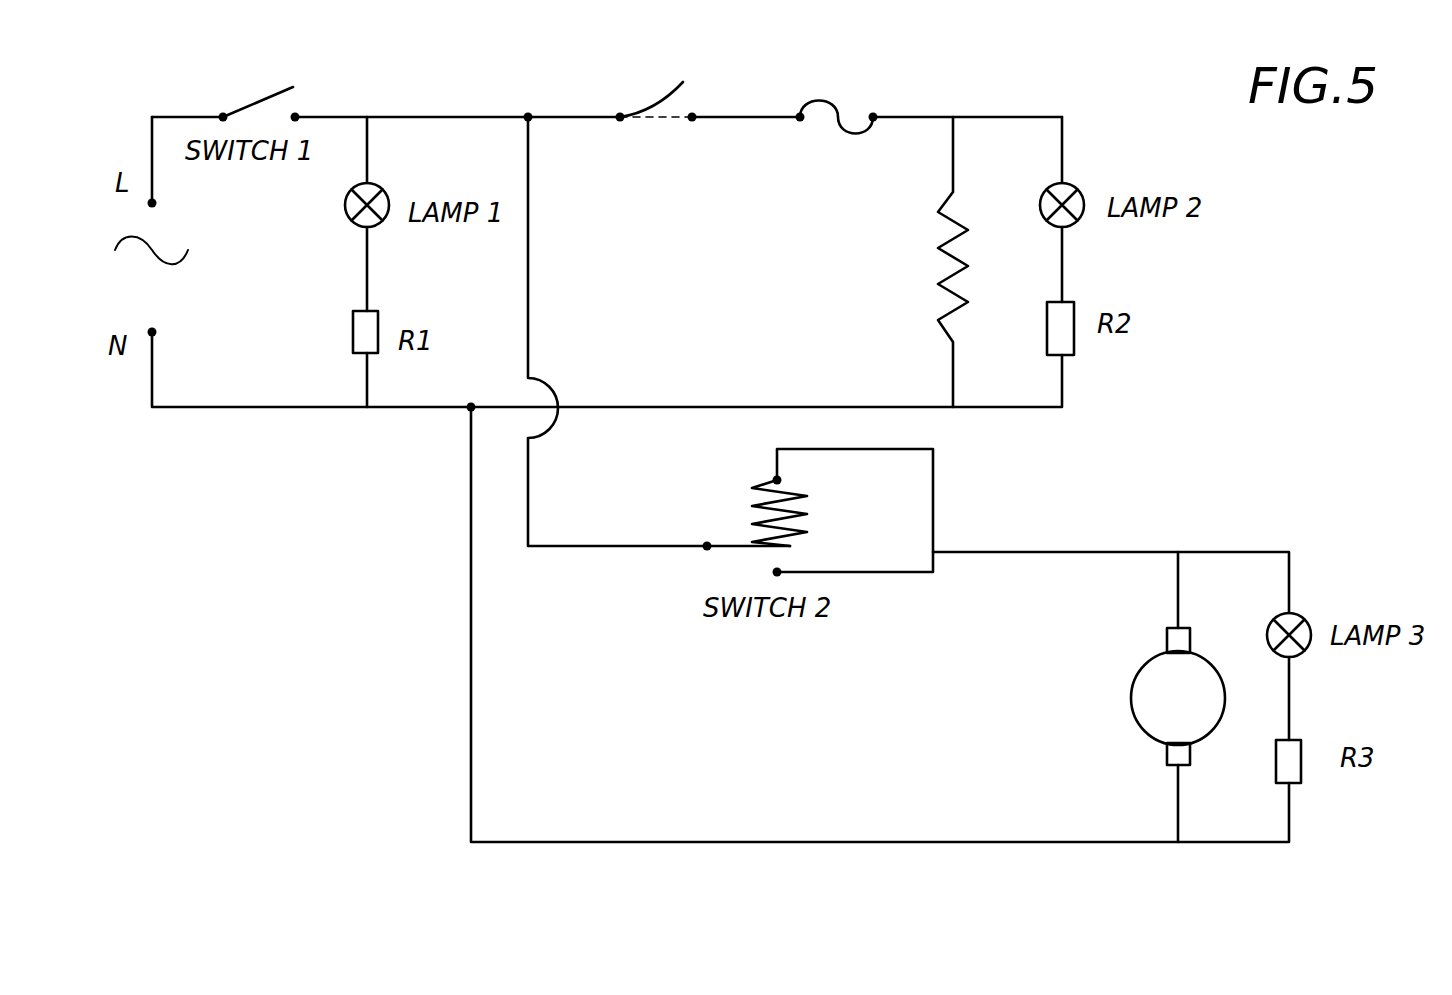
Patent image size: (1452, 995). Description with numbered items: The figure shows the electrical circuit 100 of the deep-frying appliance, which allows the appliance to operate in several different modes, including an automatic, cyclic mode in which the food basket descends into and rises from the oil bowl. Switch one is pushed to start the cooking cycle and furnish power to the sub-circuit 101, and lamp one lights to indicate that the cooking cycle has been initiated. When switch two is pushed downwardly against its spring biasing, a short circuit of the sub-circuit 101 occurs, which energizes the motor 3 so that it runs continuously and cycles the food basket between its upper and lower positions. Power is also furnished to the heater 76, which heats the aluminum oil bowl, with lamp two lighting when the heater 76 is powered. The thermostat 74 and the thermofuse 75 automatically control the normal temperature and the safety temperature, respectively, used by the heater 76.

The sub-circuit 101 is at (330, 117).
The thermostat 74 is at (673, 93).
The thermofuse 75 is at (873, 117).
The heater 76 is at (940, 292).
The motor 3 is at (1137, 723).
The electrical circuit 100 is at (1332, 410).